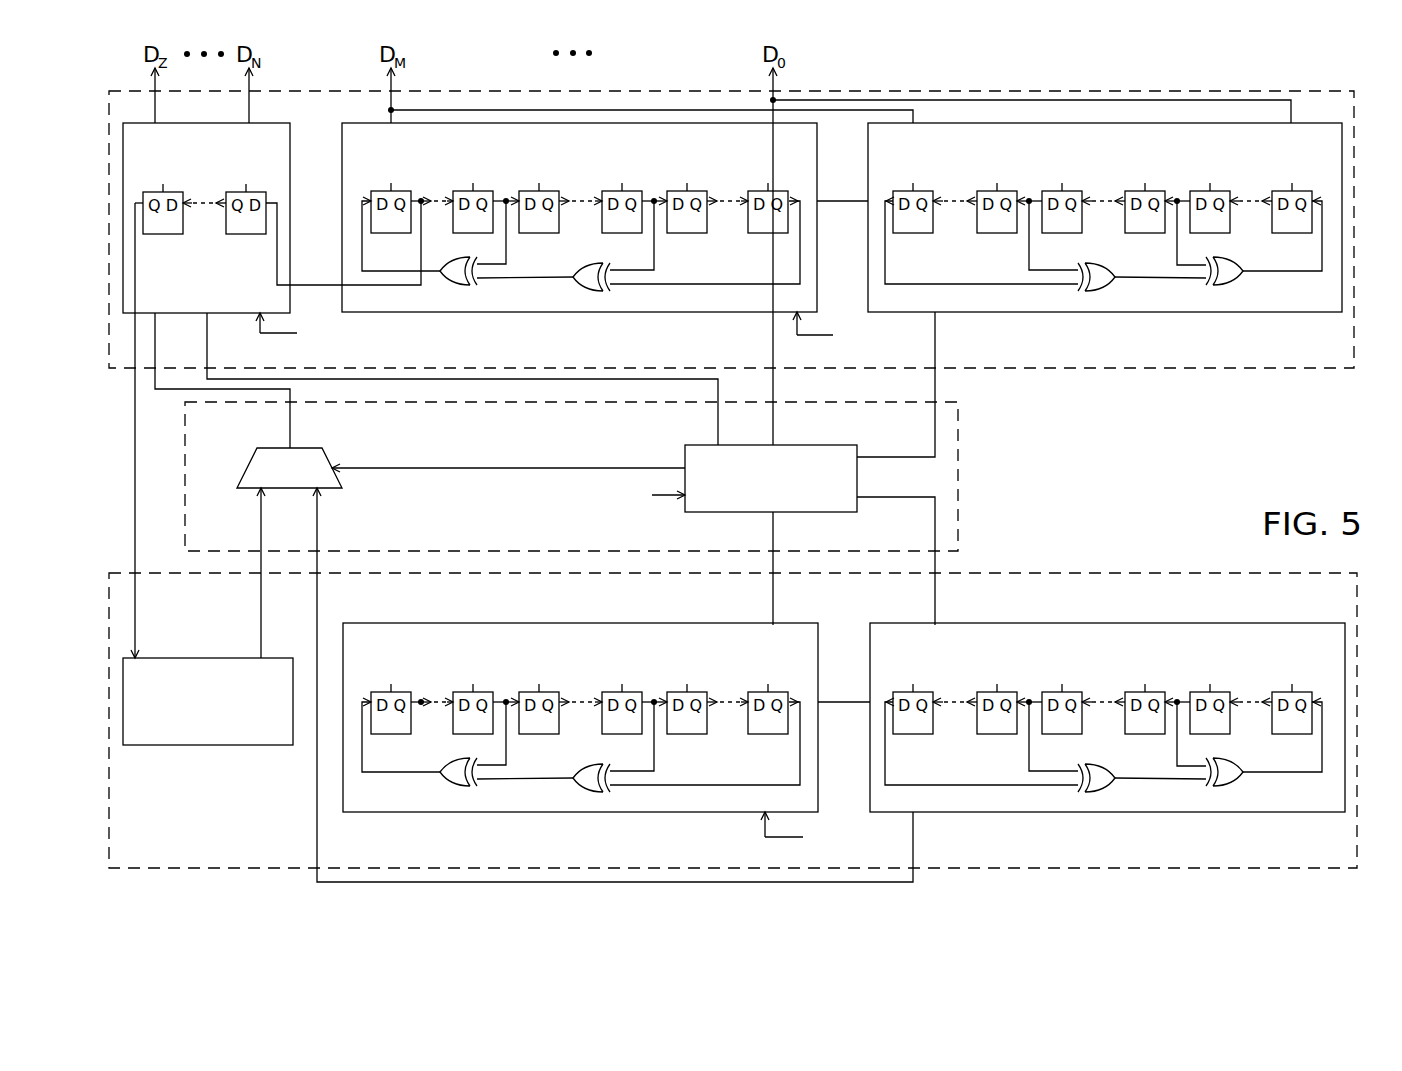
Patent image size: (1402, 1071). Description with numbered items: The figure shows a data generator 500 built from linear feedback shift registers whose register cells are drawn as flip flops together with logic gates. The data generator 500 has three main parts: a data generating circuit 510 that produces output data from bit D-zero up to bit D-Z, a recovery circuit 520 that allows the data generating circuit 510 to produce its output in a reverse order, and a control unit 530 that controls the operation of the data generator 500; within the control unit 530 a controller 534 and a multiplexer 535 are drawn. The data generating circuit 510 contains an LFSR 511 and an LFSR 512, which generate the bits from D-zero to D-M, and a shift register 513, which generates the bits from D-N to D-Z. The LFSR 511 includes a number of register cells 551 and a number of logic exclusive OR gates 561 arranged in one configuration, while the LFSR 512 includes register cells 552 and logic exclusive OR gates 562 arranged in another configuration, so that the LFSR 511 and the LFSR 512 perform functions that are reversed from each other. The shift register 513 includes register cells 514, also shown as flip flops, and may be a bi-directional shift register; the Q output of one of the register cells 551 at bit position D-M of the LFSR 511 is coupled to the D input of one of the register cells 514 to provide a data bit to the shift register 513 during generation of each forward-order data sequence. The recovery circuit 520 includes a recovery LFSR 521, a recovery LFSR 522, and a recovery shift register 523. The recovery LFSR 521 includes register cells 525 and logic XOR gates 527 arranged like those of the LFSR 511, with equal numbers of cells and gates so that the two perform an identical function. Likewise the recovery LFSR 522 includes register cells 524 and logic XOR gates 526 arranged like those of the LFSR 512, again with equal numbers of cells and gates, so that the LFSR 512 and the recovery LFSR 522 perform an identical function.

The data generator 500 is at (1153, 450).
The data generating circuit 510 is at (1120, 368).
The LFSR 511 is at (682, 313).
The LFSR 512 is at (1003, 313).
The shift register 513 is at (186, 295).
The register cells 514 is at (204, 198).
The register cells 551 is at (579, 197).
The register cells 552 is at (1102, 197).
The logic exclusive OR (XOR) gates 561 is at (574, 290).
The logic exclusive OR (XOR) gates 562 is at (1110, 286).
The recovery circuit 520 is at (1164, 572).
The recovery LFSR 521 is at (604, 623).
The recovery LFSR 522 is at (1075, 623).
The recovery shift register 523 is at (213, 745).
The register cells 524 is at (1102, 698).
The register cells 525 is at (579, 698).
The logic XOR gates 526 is at (1110, 787).
The logic XOR gates 527 is at (574, 791).
The control unit 530 is at (958, 466).
The controller 534 is at (810, 445).
The multiplexer 535 is at (249, 466).